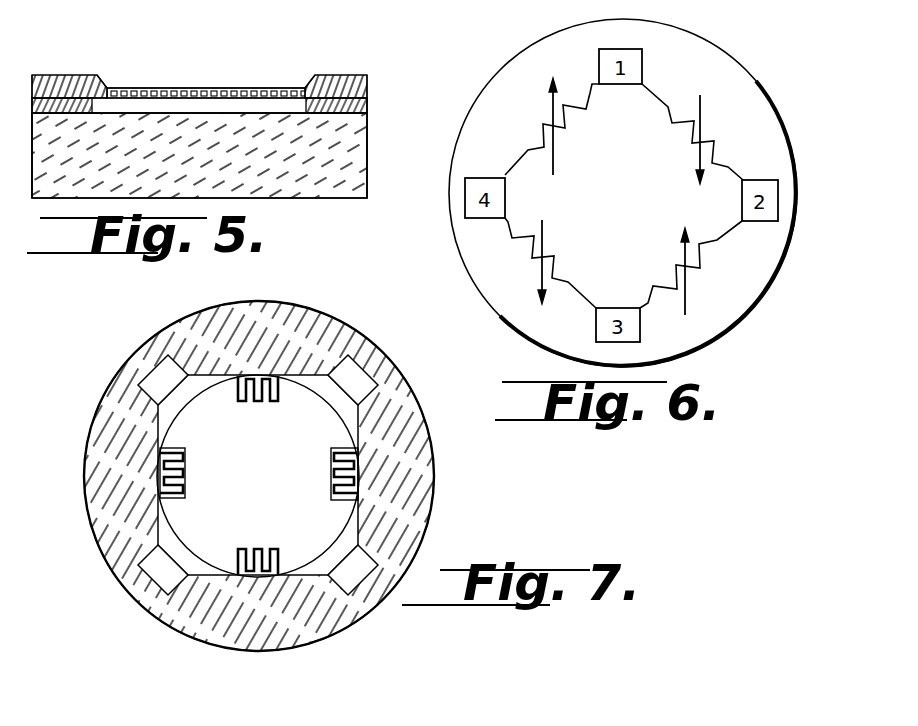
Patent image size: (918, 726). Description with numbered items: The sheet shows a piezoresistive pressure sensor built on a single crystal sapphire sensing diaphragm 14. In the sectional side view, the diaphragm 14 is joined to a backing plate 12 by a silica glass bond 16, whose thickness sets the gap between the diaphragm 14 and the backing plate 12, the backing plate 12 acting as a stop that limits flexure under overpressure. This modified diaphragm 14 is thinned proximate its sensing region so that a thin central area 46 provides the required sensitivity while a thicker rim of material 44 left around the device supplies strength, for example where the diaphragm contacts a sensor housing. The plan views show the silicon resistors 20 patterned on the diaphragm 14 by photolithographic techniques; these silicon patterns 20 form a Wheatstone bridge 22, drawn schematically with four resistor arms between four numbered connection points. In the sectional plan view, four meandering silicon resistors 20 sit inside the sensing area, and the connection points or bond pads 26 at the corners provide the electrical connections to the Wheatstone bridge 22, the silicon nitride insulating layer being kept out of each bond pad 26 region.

In FIG. 5, the backing plate 12 is at (368, 170).
In FIG. 5, the sensing diaphragm 14 is at (265, 98).
In FIG. 6, the sensing diaphragm 14 is at (703, 57).
In FIG. 7, the sensing diaphragm 14 is at (323, 323).
In FIG. 5, the silica glass bond 16 is at (368, 110).
In FIG. 7, the silica glass bond 16 is at (420, 460).
In FIG. 7, the silicon resistors 20 is at (352, 453).
In FIG. 6, the Wheatstone bridge 22 is at (738, 124).
In FIG. 7, the bond pad 26 is at (367, 377).
In FIG. 5, the bond pad layer 44 is at (68, 75).
In FIG. 5, the thin central area 46 is at (203, 76).